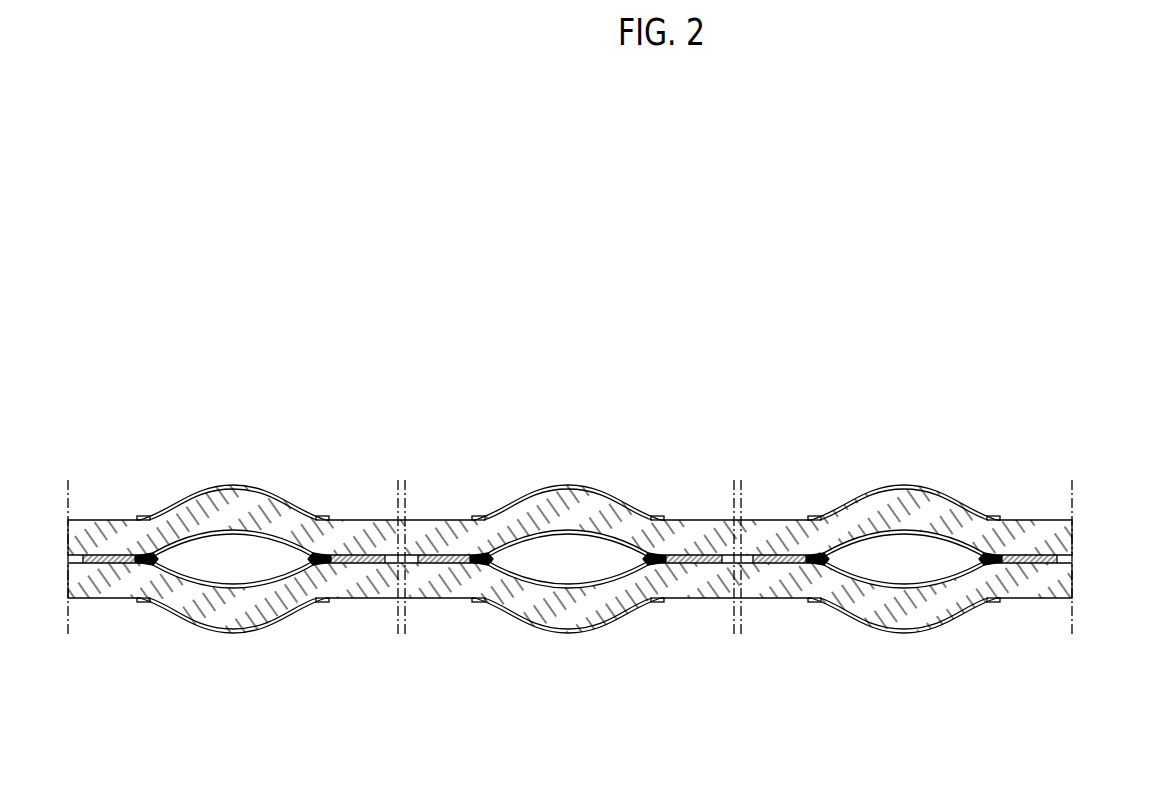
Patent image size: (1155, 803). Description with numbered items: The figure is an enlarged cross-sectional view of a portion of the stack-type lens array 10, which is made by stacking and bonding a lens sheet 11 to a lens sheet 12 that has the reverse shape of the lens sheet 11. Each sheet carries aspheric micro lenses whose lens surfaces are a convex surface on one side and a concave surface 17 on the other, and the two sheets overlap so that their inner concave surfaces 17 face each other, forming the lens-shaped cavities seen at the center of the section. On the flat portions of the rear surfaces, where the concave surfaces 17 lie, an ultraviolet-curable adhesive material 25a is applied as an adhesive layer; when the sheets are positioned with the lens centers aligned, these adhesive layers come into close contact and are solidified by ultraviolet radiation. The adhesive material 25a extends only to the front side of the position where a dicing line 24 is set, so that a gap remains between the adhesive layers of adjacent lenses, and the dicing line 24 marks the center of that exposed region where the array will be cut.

The stack-type lens array 10 is at (943, 327).
The lens sheet 11 is at (1072, 527).
The lens sheet 12 is at (1072, 590).
The concave surface 17 is at (598, 525).
The dicing line 24 is at (405, 637).
The ultraviolet-curable adhesive material 25a is at (425, 518).